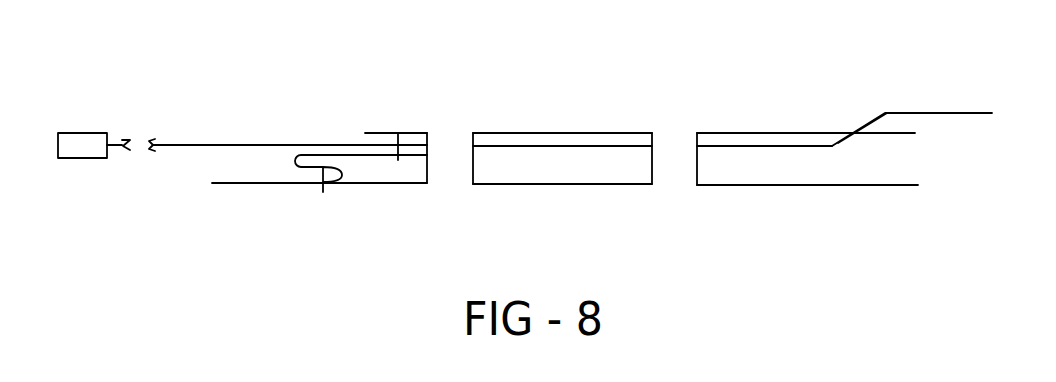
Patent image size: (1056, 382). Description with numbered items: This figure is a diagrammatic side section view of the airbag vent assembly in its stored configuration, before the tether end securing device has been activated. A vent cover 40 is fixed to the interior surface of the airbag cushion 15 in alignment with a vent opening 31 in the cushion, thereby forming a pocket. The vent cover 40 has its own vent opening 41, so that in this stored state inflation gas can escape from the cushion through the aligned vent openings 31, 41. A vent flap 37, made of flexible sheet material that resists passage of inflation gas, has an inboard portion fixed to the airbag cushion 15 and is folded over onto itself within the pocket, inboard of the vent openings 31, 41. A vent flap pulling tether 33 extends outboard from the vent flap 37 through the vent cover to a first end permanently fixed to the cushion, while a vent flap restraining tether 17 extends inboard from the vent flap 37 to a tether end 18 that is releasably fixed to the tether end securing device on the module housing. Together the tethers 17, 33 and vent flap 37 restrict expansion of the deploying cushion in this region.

The airbag cushion 15 is at (237, 186).
The vent flap restraining tether 17 is at (222, 140).
The tether end 18 is at (80, 140).
The vent opening 31 is at (445, 177).
The vent flap pulling tether 33 is at (927, 110).
The vent flap 37 is at (352, 156).
The vent cover 40 is at (387, 130).
The vent opening 41 is at (443, 140).